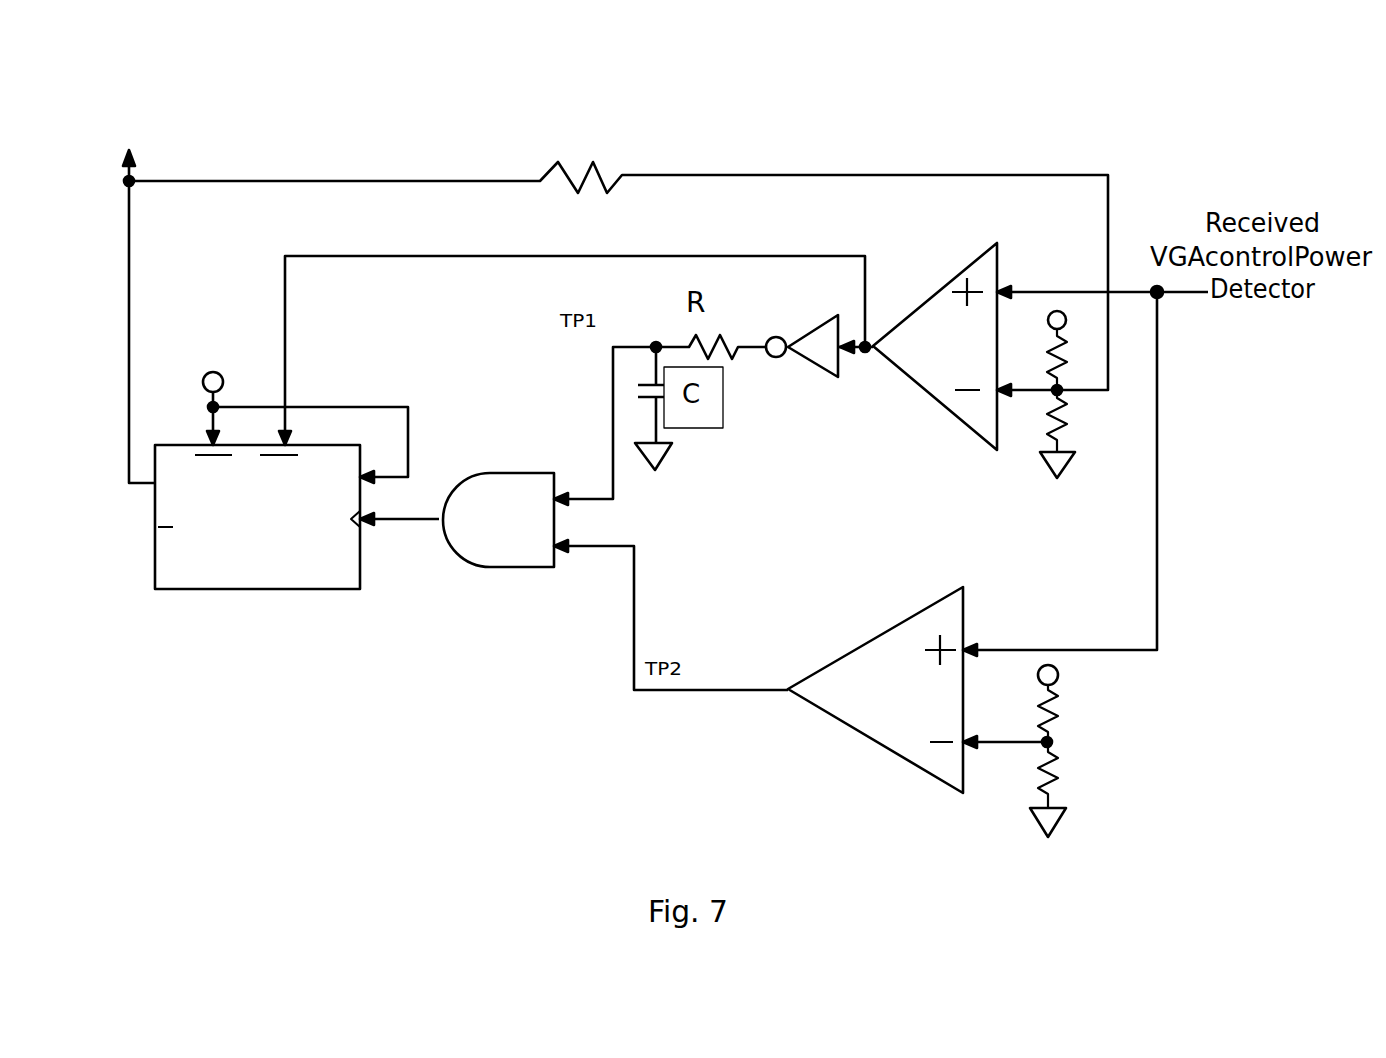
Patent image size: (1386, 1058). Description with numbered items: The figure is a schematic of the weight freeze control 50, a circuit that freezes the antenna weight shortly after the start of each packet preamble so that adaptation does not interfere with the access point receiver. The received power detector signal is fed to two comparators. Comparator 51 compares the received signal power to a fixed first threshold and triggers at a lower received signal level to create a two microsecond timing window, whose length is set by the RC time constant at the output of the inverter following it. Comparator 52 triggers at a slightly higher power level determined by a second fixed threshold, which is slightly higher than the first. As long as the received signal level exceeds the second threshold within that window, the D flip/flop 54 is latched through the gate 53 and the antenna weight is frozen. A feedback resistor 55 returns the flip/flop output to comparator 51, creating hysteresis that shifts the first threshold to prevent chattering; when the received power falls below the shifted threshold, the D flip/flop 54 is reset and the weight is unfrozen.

The weight freeze control 50 is at (396, 64).
The comparator 51 is at (960, 360).
The comparator 52 is at (959, 712).
The OR gate 53 is at (457, 520).
The D flip/flop 54 is at (281, 467).
The feedback resistor 55 is at (618, 257).